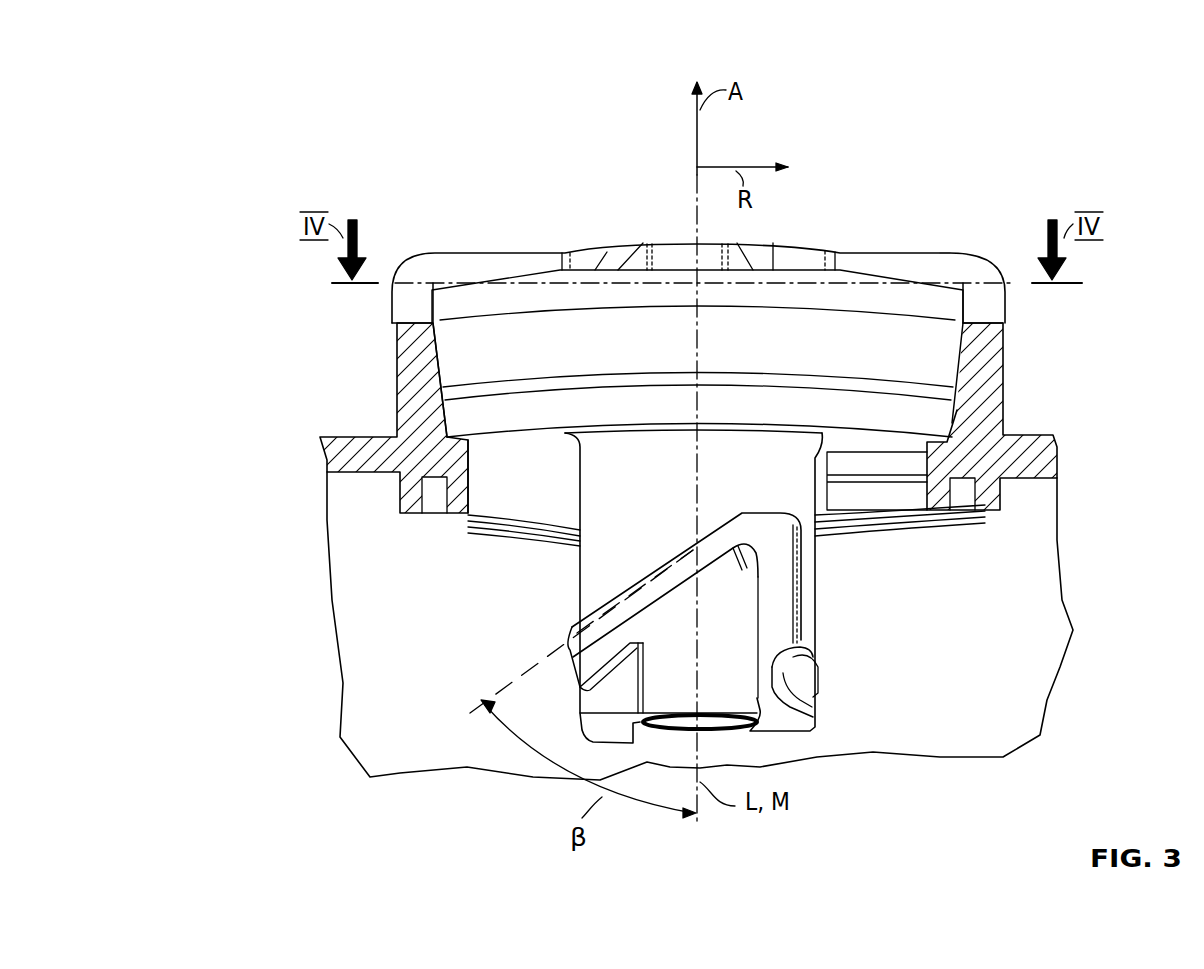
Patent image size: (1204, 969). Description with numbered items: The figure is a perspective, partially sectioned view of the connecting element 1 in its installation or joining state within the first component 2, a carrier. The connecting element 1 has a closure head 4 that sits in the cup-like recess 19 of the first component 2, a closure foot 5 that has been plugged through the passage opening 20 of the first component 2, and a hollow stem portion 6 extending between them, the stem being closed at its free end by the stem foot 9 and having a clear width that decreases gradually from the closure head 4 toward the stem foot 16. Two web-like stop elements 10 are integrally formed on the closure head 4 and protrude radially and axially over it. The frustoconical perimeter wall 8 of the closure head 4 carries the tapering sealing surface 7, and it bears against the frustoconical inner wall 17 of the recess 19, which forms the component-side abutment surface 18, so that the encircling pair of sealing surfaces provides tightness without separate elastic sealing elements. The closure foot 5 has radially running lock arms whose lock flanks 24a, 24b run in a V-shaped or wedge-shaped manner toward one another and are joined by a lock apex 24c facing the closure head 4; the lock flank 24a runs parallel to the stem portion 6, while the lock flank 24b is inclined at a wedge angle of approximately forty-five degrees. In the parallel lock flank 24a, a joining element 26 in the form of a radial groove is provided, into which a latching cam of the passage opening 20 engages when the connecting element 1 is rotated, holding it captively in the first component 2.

The connecting element 1 is at (953, 257).
The first component 2 is at (683, 540).
The closure head 4 is at (1031, 415).
The closure foot 5 is at (701, 602).
The stem portion 6 is at (623, 555).
The sealing surface 7 is at (440, 340).
The perimeter wall 8 is at (960, 373).
The stem foot 9 is at (727, 720).
The stop element 10 is at (433, 263).
The stem foot 16 is at (733, 635).
The inner wall 17 is at (362, 415).
The abutment surface 18 is at (438, 372).
The recess 19 is at (1031, 415).
The passage opening 20 is at (535, 497).
The lock flank 24a is at (797, 580).
The lock flank 24b is at (637, 582).
The lock apex 24c is at (763, 513).
The joining element 26 is at (783, 668).